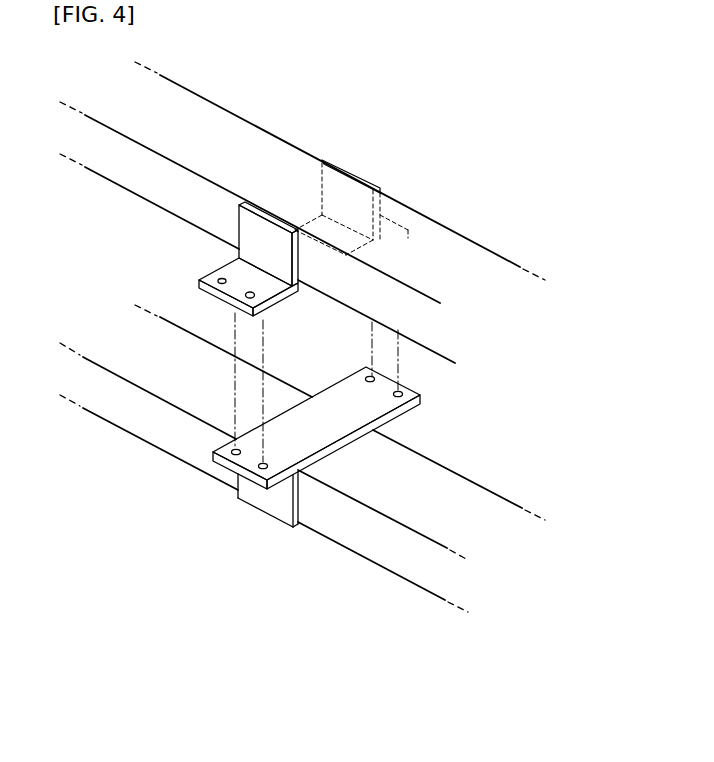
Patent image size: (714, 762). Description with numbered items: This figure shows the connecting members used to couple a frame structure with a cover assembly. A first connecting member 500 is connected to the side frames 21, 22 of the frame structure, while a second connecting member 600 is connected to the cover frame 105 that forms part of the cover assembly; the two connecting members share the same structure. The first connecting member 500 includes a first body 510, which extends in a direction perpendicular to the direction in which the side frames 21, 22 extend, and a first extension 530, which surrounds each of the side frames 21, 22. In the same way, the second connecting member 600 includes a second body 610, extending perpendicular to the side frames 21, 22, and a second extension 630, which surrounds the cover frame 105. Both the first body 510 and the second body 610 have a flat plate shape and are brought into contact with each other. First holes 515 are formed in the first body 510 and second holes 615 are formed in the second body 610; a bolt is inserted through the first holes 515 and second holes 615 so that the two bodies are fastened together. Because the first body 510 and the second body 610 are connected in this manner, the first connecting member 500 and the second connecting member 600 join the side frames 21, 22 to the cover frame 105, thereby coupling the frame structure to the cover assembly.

The cover frame 105 is at (492, 260).
The side frame 21 is at (323, 458).
The side frame 22 is at (502, 497).
The first connecting member 500 is at (338, 469).
The first body 510 is at (413, 408).
The first holes 515 is at (418, 390).
The first extension 530 is at (293, 503).
The second connecting member 600 is at (189, 207).
The second body 610 is at (400, 213).
The second holes 615 is at (212, 270).
The second extension 630 is at (260, 228).